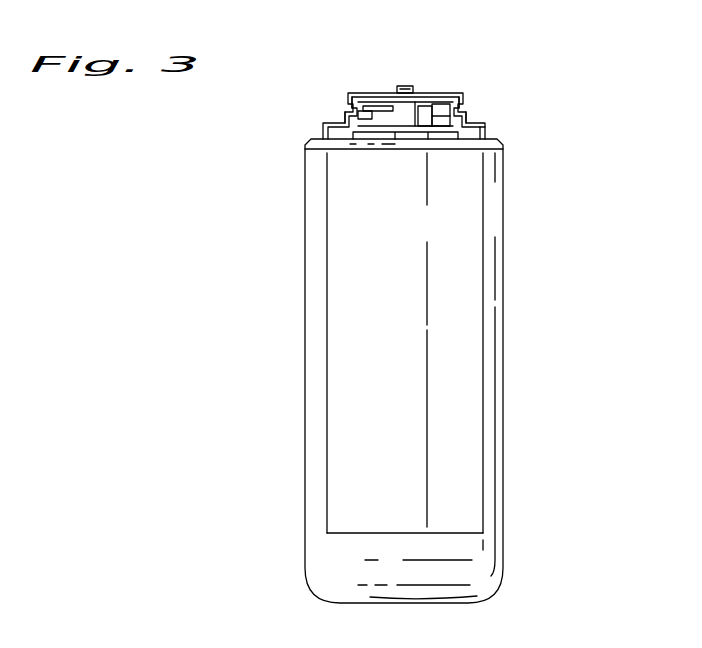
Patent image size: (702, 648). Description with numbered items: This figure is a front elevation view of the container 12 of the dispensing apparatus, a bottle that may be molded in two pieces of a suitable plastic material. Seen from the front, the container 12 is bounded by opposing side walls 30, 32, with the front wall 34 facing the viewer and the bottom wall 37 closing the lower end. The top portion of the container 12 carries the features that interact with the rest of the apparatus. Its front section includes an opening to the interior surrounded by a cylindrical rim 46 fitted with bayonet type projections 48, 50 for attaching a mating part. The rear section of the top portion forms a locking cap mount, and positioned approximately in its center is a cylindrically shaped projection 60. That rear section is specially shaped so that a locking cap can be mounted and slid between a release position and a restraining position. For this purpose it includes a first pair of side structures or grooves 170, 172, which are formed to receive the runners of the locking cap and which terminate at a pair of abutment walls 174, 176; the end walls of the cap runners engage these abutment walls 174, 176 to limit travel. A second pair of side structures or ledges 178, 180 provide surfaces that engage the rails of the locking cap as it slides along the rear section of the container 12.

The container 12 is at (560, 71).
The side wall 30 is at (305, 333).
The side wall 32 is at (503, 383).
The front wall 34 is at (385, 311).
The bottom wall 37 is at (425, 606).
The cylindrical rim 46 is at (408, 112).
The bayonet type projection 48 is at (360, 98).
The bayonet type projection 50 is at (438, 112).
The cylindrically shaped projection 60 is at (403, 87).
The side groove 170 is at (335, 124).
The side groove 172 is at (483, 121).
The abutment wall 174 is at (345, 116).
The abutment wall 176 is at (468, 117).
The side ledge 178 is at (345, 103).
The side ledge 180 is at (465, 102).